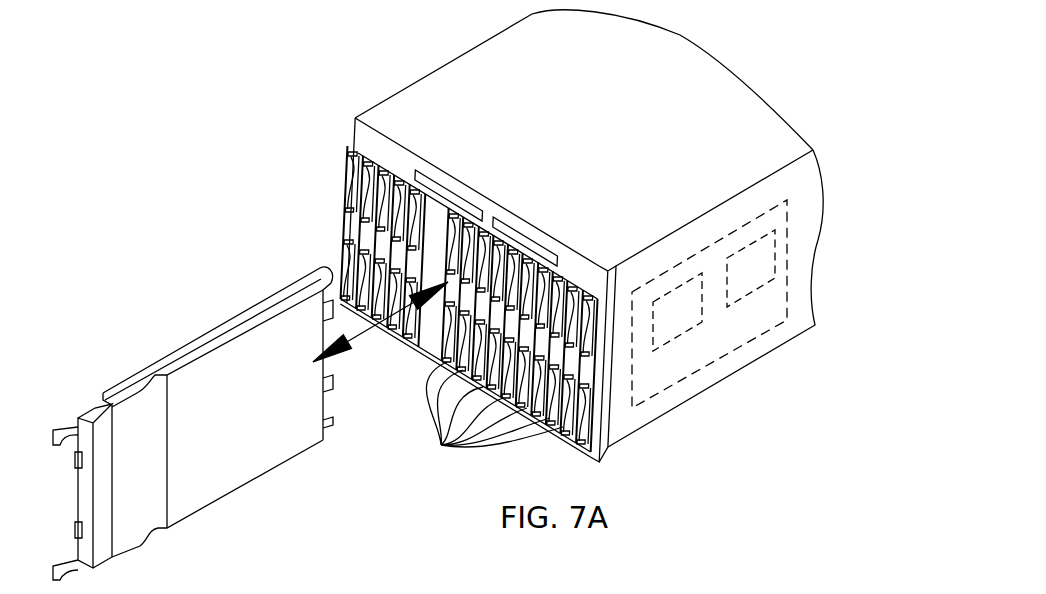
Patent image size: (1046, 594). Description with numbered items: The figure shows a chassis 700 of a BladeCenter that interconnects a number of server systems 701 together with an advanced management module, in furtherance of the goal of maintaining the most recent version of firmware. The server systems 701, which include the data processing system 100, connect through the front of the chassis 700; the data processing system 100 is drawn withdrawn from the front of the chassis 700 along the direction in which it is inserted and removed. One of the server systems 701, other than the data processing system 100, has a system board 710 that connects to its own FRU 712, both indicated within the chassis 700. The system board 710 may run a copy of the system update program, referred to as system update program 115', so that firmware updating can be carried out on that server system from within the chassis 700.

The chassis 700 is at (657, 97).
The server systems 701 is at (436, 446).
The system board 710 is at (733, 338).
The FRU 712 is at (767, 263).
The system update program 115' is at (683, 362).
The data processing system 100 is at (173, 358).